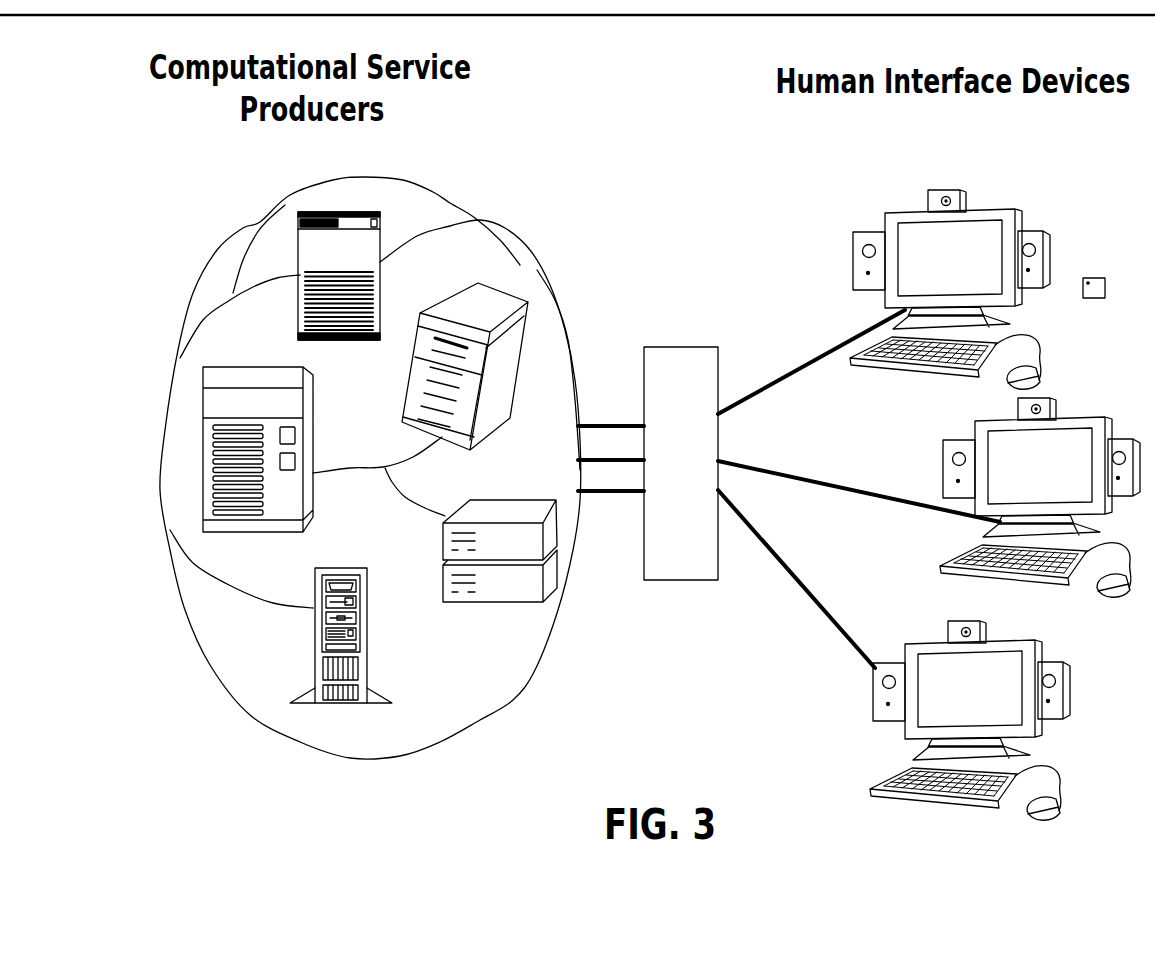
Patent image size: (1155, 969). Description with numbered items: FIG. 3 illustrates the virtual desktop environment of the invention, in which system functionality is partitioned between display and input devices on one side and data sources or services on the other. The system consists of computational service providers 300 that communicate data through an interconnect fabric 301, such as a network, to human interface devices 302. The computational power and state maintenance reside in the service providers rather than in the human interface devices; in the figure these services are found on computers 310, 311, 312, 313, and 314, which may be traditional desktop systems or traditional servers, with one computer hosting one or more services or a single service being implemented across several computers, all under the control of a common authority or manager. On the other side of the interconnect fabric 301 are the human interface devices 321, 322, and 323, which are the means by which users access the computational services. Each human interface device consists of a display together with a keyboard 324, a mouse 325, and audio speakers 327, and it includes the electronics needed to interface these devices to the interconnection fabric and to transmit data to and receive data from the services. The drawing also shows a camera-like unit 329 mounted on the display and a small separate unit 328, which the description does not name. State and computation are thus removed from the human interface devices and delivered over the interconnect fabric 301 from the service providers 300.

The computational service providers 300 is at (348, 776).
The interconnect fabric 301 is at (687, 580).
The human interface devices 302 is at (991, 484).
The computer 310 is at (384, 253).
The computer 311 is at (526, 350).
The computer 312 is at (512, 603).
The computer 313 is at (316, 654).
The computer 314 is at (203, 410).
The human interface device 321 is at (1017, 209).
The human interface device 322 is at (1093, 418).
The human interface device 323 is at (1043, 646).
The keyboard 324 is at (910, 366).
The mouse 325 is at (1008, 382).
The audio speakers 327 is at (1051, 240).
The auxiliary input device 328 is at (1097, 279).
The camera 329 is at (952, 190).